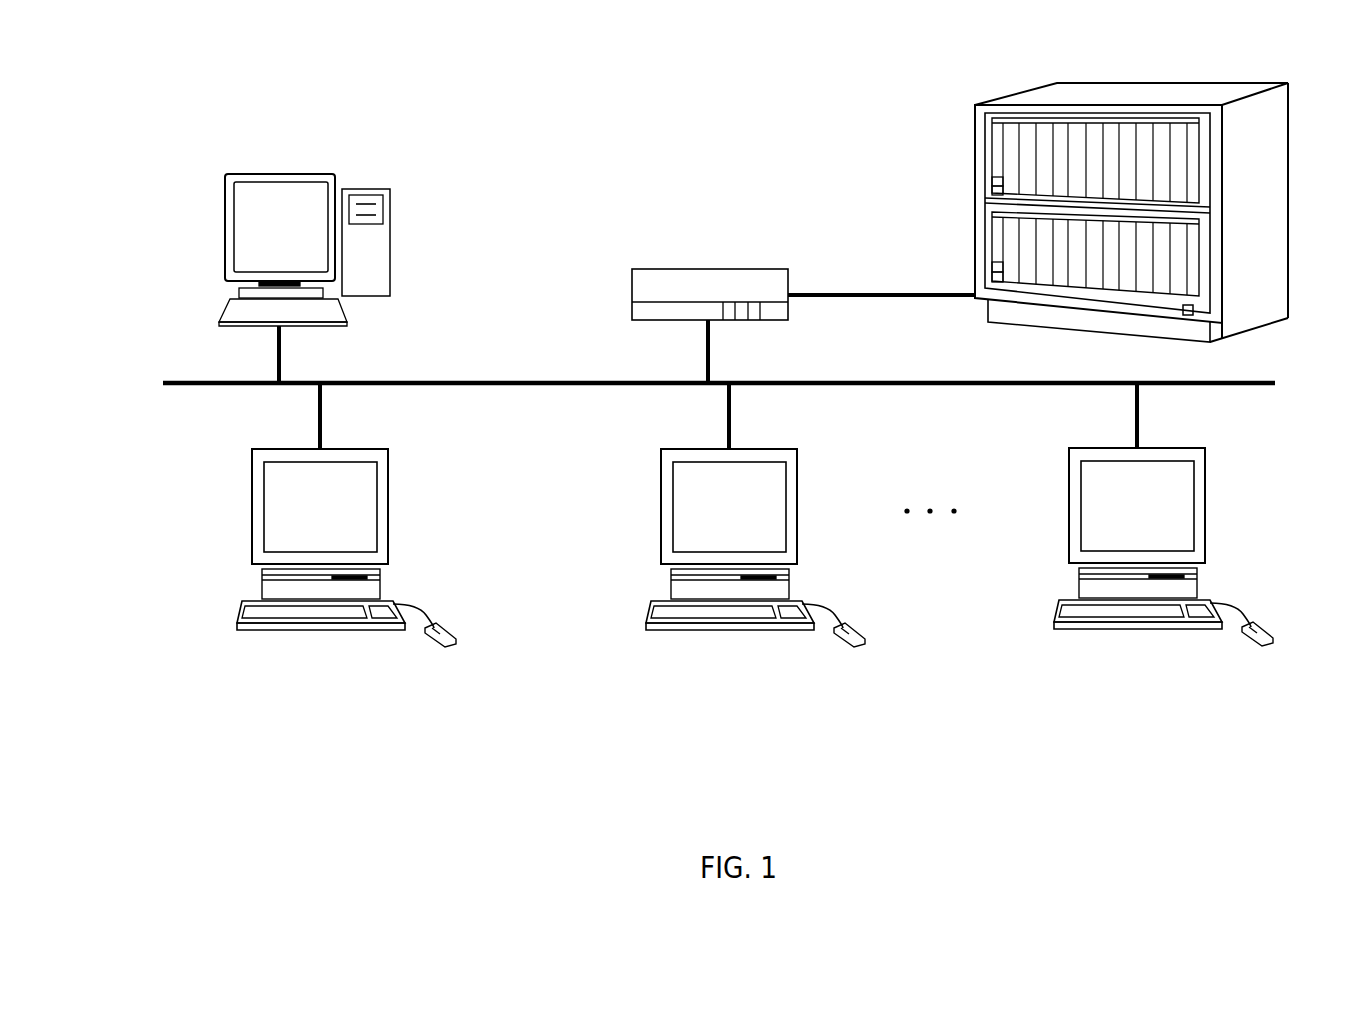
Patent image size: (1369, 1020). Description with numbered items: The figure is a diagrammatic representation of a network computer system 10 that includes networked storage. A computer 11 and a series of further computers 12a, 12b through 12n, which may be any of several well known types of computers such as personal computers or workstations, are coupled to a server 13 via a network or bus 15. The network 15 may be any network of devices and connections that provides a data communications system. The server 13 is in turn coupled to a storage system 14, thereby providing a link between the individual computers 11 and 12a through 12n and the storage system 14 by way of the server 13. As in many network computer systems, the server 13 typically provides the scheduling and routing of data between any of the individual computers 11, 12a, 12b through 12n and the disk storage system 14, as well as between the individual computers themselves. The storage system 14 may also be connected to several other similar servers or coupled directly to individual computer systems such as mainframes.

The network computer system 10 is at (201, 126).
The computer 11 is at (225, 229).
The computer 12a is at (252, 498).
The computer 12b is at (661, 498).
The computer 12n is at (1069, 498).
The server 13 is at (719, 268).
The storage system 14 is at (1289, 192).
The network or bus 15 is at (1263, 386).